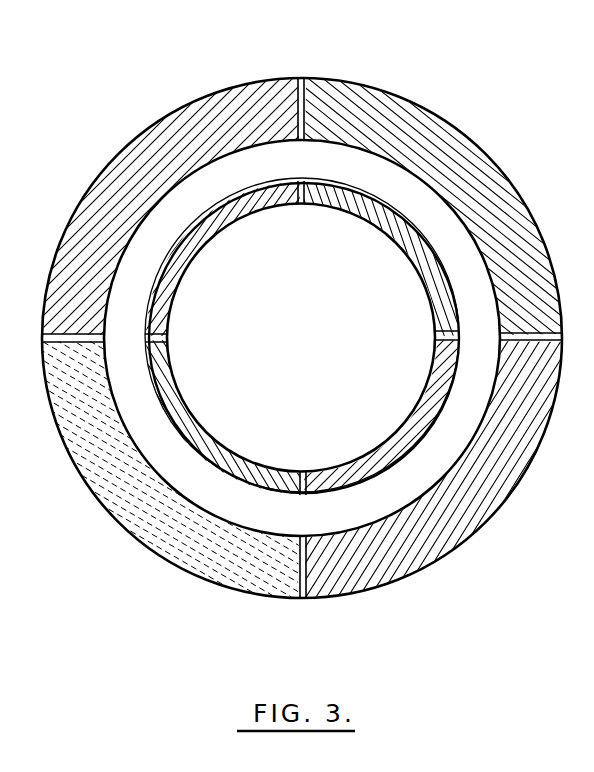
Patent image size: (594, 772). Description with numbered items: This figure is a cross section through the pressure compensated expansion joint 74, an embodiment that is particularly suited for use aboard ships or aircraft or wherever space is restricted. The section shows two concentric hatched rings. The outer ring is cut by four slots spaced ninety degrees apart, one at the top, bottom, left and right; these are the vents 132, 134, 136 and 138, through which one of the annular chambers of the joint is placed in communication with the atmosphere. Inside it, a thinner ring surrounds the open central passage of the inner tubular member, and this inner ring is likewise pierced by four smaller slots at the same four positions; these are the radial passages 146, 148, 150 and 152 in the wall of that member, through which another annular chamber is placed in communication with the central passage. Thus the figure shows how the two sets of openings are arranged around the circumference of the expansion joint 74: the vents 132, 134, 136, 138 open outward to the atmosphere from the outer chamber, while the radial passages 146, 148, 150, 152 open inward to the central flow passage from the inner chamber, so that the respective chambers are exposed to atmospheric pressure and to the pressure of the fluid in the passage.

The pressure compensated expansion joint 74 is at (150, 118).
The vent 132 is at (305, 598).
The vent 134 is at (52, 342).
The vent 136 is at (305, 97).
The vent 138 is at (560, 334).
The radial passage 146 is at (303, 482).
The radial passage 148 is at (164, 338).
The radial passage 150 is at (301, 207).
The radial passage 152 is at (438, 334).